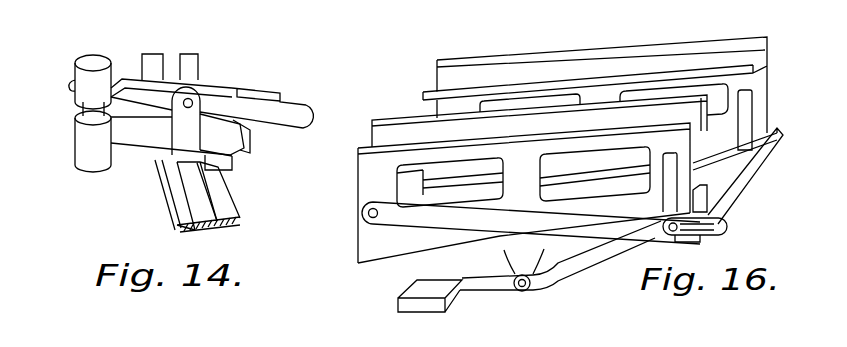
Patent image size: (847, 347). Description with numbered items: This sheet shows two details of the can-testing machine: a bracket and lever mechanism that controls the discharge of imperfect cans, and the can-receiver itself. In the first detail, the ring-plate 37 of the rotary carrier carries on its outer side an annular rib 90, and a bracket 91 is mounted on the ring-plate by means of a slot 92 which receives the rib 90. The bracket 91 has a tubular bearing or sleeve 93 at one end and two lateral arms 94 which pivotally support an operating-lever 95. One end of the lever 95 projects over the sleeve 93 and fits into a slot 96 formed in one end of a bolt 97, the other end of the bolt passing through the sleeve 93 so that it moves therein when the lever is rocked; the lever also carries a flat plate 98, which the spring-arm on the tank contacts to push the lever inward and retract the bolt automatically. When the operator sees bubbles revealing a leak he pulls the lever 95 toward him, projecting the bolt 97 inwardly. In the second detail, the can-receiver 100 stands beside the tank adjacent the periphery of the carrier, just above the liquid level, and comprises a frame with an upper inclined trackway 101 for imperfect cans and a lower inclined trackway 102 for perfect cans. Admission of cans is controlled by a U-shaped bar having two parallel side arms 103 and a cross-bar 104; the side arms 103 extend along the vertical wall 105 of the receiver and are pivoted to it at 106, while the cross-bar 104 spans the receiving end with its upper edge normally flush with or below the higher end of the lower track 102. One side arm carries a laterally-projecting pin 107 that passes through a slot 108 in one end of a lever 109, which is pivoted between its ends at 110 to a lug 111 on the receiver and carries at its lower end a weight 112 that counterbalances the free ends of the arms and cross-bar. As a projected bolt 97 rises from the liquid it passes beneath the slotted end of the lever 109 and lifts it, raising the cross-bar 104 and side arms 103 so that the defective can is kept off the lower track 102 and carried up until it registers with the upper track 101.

In FIG. 14, the ring-plate 37 is at (236, 203).
In FIG. 14, the annular rib 90 is at (183, 213).
In FIG. 14, the bracket 91 is at (262, 154).
In FIG. 14, the slot 92 is at (163, 172).
In FIG. 14, the tubular bearing or sleeve 93 is at (87, 168).
In FIG. 14, the lateral arms 94 is at (190, 80).
In FIG. 14, the operating-lever 95 is at (292, 117).
In FIG. 14, the slot 96 is at (75, 68).
In FIG. 14, the bolt 97 is at (80, 111).
In FIG. 14, the flat plate 98 is at (245, 93).
In FIG. 16, the can-receiver 100 is at (524, 193).
In FIG. 16, the upper inclined trackway 101 is at (620, 80).
In FIG. 16, the lower inclined trackway 102 is at (716, 162).
In FIG. 16, the side arms 103 is at (453, 217).
In FIG. 16, the cross-bar 104 is at (733, 192).
In FIG. 16, the vertical wall 105 is at (377, 254).
In FIG. 16, the pivot 106 is at (367, 217).
In FIG. 16, the laterally-projecting pin 107 is at (675, 240).
In FIG. 16, the slot 108 is at (727, 229).
In FIG. 16, the lever 109 is at (594, 262).
In FIG. 16, the pivot 110 is at (523, 292).
In FIG. 16, the lug 111 is at (518, 260).
In FIG. 16, the weight 112 is at (430, 305).